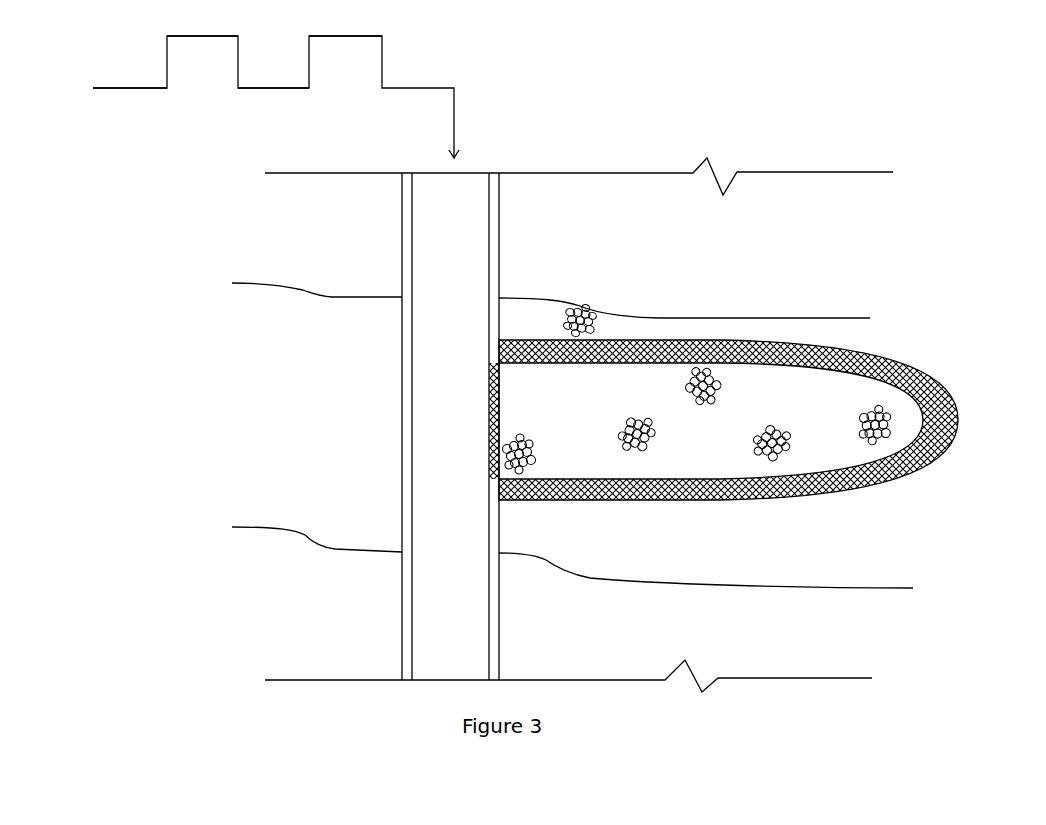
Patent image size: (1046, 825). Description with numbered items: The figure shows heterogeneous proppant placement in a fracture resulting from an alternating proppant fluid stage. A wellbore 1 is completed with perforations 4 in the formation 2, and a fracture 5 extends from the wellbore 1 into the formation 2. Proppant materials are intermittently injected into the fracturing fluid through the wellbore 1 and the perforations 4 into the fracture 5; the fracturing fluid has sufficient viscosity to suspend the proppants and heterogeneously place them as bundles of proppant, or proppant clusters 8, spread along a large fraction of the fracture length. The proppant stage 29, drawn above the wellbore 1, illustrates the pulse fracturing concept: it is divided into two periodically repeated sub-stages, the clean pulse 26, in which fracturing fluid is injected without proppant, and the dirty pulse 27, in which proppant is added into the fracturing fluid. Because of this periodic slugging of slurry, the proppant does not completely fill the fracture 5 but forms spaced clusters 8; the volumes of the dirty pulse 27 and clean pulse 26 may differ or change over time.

The wellbore 1 is at (456, 254).
The formation 2 is at (278, 399).
The perforations 4 is at (487, 428).
The fracture 5 is at (857, 373).
The proppant cluster 8 is at (650, 415).
The clean pulse 26 is at (201, 73).
The dirty pulse 27 is at (274, 53).
The proppant stage 29 is at (250, 97).